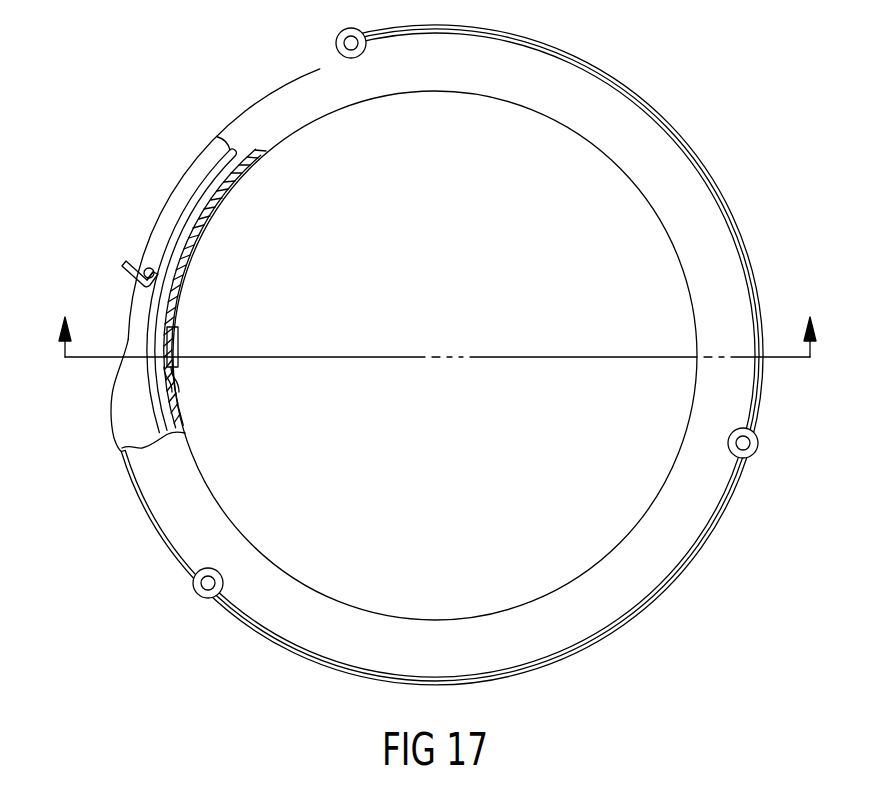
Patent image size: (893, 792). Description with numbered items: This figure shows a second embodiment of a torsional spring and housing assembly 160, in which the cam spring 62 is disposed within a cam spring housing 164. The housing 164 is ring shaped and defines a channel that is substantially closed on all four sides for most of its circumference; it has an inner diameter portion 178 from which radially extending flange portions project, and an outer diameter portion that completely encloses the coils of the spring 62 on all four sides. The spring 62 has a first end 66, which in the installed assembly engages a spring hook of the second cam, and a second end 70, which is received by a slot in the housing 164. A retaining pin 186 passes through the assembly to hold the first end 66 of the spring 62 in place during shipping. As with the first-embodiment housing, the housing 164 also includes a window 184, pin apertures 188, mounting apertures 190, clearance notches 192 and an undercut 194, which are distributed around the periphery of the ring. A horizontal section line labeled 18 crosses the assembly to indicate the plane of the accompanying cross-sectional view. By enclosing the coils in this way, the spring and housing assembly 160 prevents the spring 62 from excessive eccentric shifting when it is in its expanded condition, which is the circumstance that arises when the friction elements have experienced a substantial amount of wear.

The torsional spring and housing assembly 160 is at (629, 70).
The cam spring housing 164 is at (652, 572).
The cam spring 62 is at (183, 215).
The inner diameter portion 178 is at (213, 210).
The second end 70 is at (181, 337).
The window 184 is at (170, 386).
The first end 66 is at (124, 265).
The retaining pin 186 is at (144, 263).
The pin apertures 188 is at (156, 272).
The undercut 194 is at (318, 72).
The clearance notches 192 is at (754, 432).
The mounting apertures 190 is at (751, 450).
The section line 18- 18 is at (436, 337).